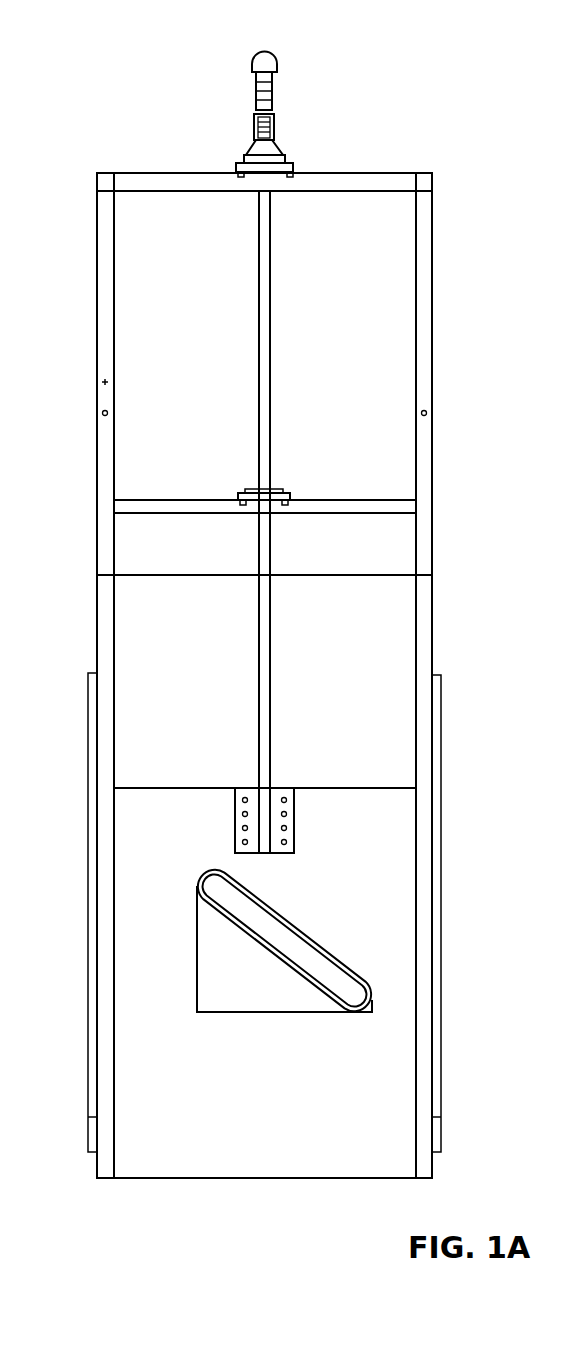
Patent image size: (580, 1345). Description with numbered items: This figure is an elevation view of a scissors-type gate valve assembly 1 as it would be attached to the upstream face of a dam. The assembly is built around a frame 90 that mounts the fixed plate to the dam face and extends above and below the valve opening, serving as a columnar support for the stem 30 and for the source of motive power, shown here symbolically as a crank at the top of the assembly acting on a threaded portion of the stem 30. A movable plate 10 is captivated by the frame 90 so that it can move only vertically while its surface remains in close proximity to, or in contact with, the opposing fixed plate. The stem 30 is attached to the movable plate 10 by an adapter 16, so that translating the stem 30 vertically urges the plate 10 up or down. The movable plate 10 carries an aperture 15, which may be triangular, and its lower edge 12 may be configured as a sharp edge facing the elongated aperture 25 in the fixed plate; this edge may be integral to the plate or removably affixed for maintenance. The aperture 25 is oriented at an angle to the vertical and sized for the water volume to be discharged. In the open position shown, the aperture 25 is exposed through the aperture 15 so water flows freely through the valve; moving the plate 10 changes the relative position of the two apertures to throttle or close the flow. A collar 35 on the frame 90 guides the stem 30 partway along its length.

The scissors-type gate valve assembly 1 is at (104, 34).
The movable plate 10 is at (353, 1166).
The lower edge 12 is at (300, 1013).
The aperture 15 is at (260, 992).
The adapter 16 is at (284, 800).
The aperture 25 is at (265, 898).
The stem 30 is at (272, 676).
The collar 35 is at (292, 498).
The frame 90 is at (441, 705).